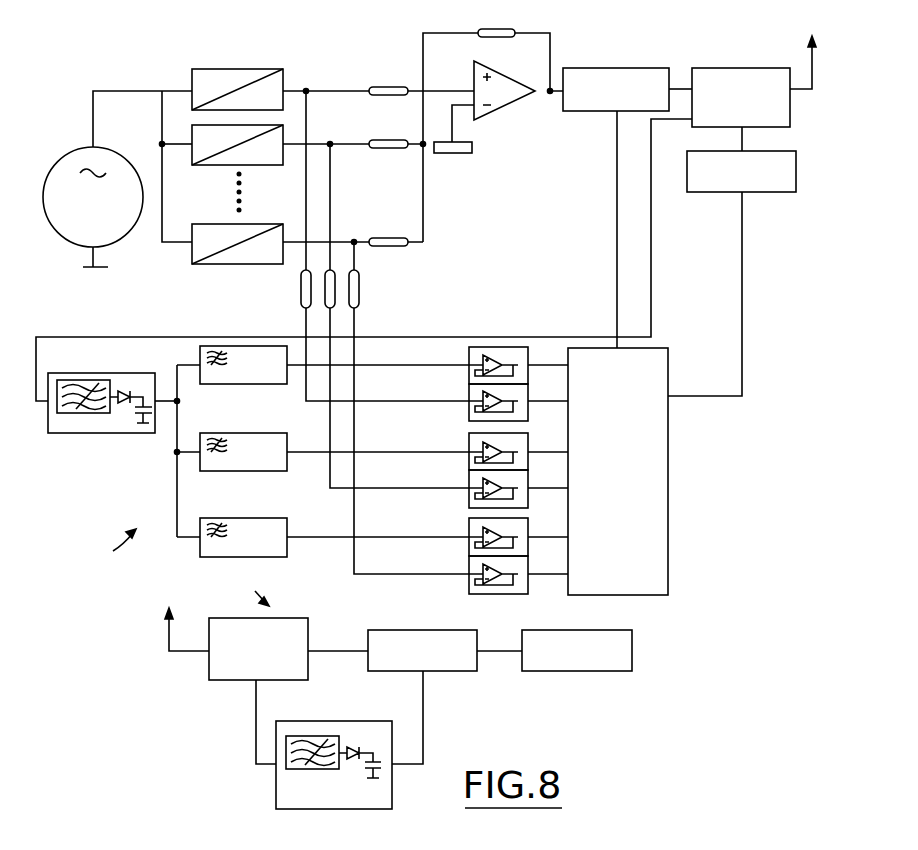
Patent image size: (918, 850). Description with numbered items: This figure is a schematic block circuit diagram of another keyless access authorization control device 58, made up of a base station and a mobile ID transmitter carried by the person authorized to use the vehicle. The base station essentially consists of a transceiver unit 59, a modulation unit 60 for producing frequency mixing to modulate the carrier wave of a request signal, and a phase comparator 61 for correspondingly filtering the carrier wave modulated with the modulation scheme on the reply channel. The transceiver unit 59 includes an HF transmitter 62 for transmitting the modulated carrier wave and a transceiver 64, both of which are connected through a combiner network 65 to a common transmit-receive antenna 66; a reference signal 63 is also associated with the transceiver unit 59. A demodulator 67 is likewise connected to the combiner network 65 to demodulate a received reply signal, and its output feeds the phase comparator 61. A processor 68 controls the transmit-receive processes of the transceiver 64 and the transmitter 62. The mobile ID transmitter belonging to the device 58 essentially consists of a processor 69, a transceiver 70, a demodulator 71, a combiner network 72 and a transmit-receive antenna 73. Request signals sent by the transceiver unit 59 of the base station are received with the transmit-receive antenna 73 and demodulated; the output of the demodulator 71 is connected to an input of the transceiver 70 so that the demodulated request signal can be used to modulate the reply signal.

The access authorization control device 58 is at (588, 705).
The transceiver unit 59 is at (720, 422).
The modulation unit 60 is at (364, 198).
The phase comparator 61 is at (167, 487).
The HF transmitter 62 is at (595, 111).
The reference signal 63 is at (76, 148).
The transceiver 64 is at (722, 194).
The combiner network 65 is at (731, 67).
The transmit-receive antenna 66 is at (800, 72).
The demodulator 67 is at (111, 440).
The processor 68 is at (668, 500).
The processor 69 is at (580, 630).
The transceiver 70 is at (429, 628).
The demodulator 71 is at (271, 781).
The combiner network 72 is at (237, 682).
The transmit-receive antenna 73 is at (187, 657).